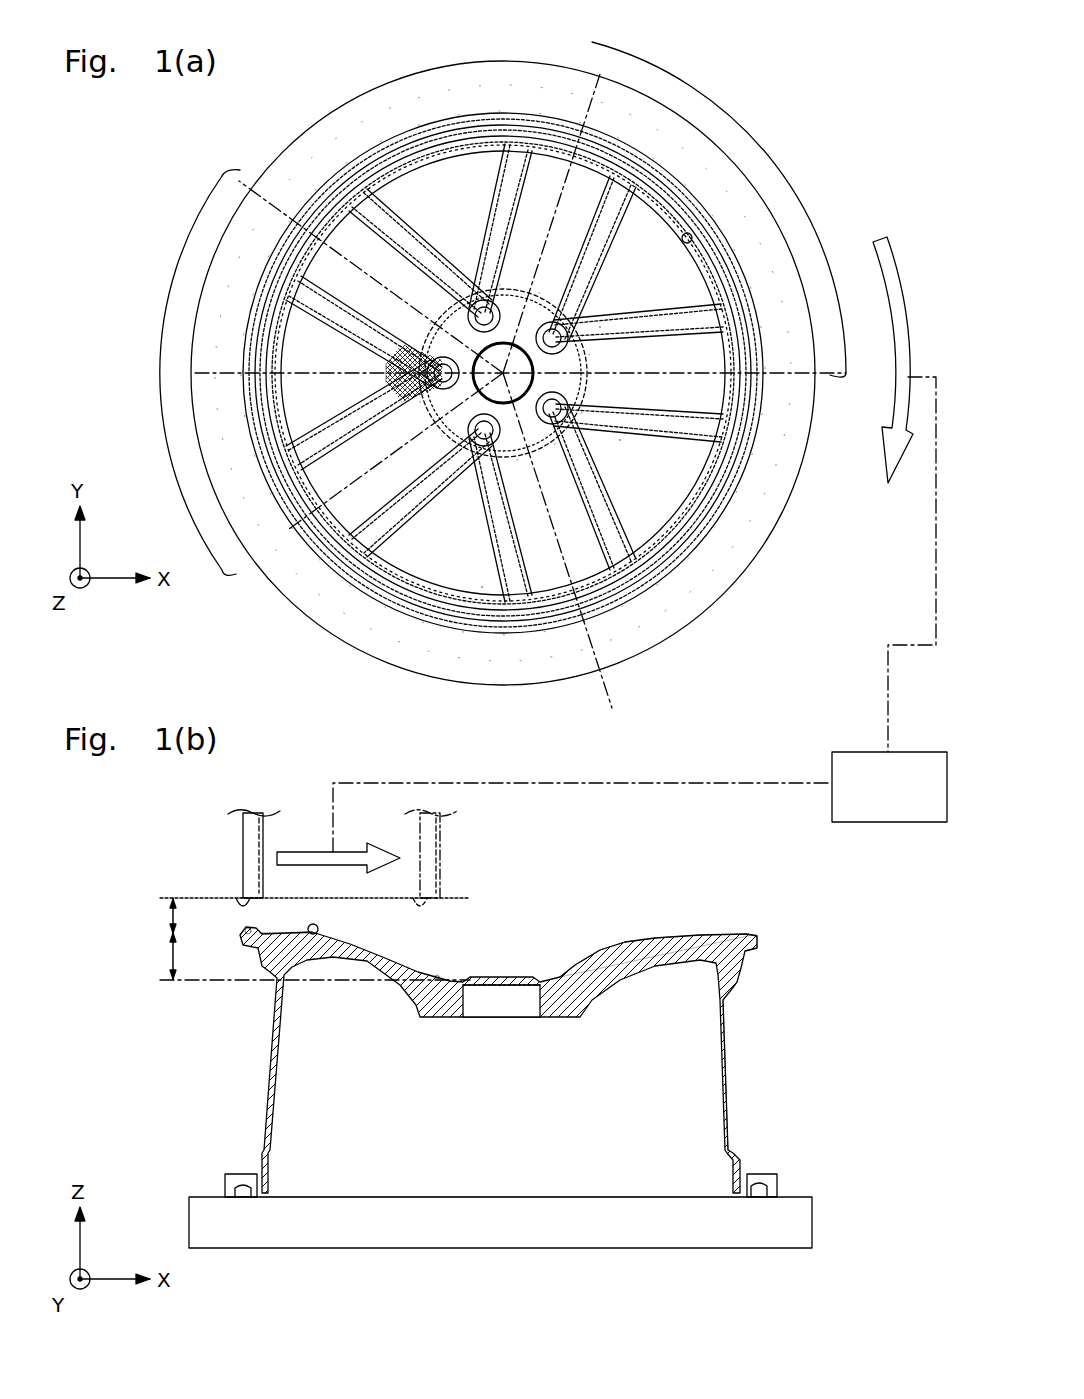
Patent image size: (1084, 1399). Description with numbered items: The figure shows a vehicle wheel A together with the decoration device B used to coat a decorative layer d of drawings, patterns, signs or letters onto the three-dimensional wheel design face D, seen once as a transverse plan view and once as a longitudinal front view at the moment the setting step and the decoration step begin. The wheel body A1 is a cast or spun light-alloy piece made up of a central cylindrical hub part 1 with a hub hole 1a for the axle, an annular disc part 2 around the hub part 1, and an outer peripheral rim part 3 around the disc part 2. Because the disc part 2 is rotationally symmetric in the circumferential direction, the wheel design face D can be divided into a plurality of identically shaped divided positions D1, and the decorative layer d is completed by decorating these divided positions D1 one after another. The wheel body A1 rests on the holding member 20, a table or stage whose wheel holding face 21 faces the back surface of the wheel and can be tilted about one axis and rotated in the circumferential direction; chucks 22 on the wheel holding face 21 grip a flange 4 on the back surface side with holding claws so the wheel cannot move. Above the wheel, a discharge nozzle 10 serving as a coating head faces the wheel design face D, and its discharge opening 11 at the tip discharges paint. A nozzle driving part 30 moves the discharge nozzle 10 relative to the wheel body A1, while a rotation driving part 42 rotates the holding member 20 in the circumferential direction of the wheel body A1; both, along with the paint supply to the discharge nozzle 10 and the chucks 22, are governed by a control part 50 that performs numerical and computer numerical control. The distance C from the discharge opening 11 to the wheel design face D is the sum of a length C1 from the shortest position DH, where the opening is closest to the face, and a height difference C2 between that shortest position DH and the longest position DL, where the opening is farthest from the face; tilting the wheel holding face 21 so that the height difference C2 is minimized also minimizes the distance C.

In FIG. 1A, the vehicle wheel A is at (546, 100).
In FIG. 1B, the vehicle wheel A is at (777, 915).
In FIG. 1A, the wheel body A1 is at (714, 533).
In FIG. 1B, the wheel body A1 is at (723, 1000).
In FIG. 1B, the hub part 1 is at (560, 976).
In FIG. 1A, the hub hole 1a is at (536, 371).
In FIG. 1B, the hub hole 1a is at (470, 1018).
In FIG. 1B, the disc part 2 is at (650, 935).
In FIG. 1B, the rim part 3 is at (745, 940).
In FIG. 1B, the flange 4 is at (235, 1183).
In FIG. 1B, the discharge nozzle 10 is at (242, 850).
In FIG. 1B, the discharge opening 11 is at (250, 910).
In FIG. 1A, the holding member 20 is at (278, 601).
In FIG. 1B, the holding member 20 is at (470, 1250).
In FIG. 1A, the wheel holding face 21 is at (363, 628).
In FIG. 1B, the wheel holding face 21 is at (440, 1196).
In FIG. 1B, the chuck 22 is at (240, 1174).
In FIG. 1B, the nozzle driving part 30 is at (313, 851).
In FIG. 1A, the rotation driving part 42 is at (902, 277).
In FIG. 1A, the control part 50 is at (904, 801).
In FIG. 1B, the decoration device B is at (601, 780).
In FIG. 1B, the distance C is at (94, 903).
In FIG. 1B, the length C1 is at (168, 915).
In FIG. 1B, the height difference C2 is at (168, 957).
In FIG. 1B, the wheel design face D is at (615, 851).
In FIG. 1A, the divided position D1 is at (161, 373).
In FIG. 1A, the shortest position DH is at (290, 218).
In FIG. 1B, the shortest position DH is at (243, 934).
In FIG. 1A, the longest position DL is at (423, 337).
In FIG. 1B, the longest position DL is at (437, 977).
In FIG. 1A, the decorative layer d is at (400, 368).
In FIG. 1B, the decorative layer d is at (313, 934).